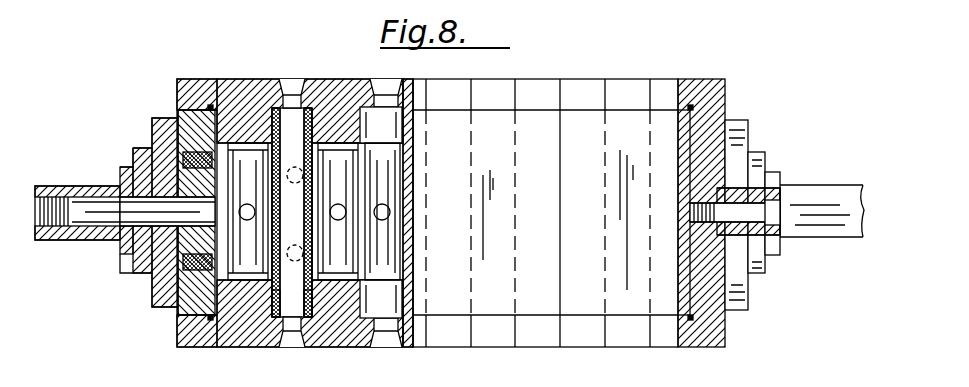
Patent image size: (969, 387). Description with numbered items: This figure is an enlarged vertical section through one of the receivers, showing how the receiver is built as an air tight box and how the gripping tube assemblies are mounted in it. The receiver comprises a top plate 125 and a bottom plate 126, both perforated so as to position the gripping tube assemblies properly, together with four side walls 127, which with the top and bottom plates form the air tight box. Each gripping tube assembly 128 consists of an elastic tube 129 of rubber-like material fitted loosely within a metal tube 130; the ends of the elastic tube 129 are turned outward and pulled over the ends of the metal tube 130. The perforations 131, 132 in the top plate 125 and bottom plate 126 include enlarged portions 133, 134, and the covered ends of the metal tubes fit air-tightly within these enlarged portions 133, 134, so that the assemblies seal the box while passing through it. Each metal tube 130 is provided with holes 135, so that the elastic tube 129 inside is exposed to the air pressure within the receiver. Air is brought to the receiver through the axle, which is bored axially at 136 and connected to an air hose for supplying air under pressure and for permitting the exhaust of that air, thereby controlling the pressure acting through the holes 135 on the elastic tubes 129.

The top plate 125 is at (243, 84).
The bottom plate 126 is at (178, 337).
The side walls 127 is at (705, 138).
The gripping tube assembly 128 is at (413, 174).
The elastic tube 129 is at (300, 312).
The metal tube 130 is at (400, 269).
The perforation 131 is at (293, 86).
The perforation 132 is at (300, 307).
The enlarged portion 133 is at (318, 110).
The enlarged portion 134 is at (270, 308).
The holes 135 is at (233, 257).
The axial bore 136 is at (108, 213).